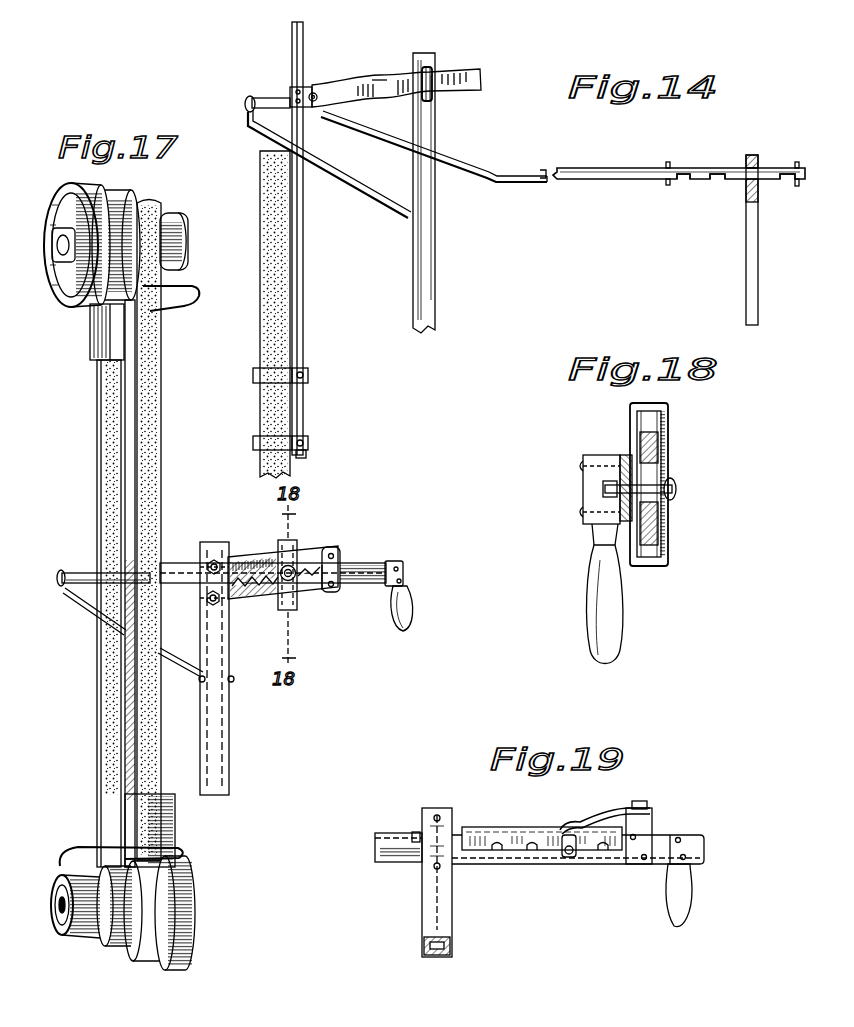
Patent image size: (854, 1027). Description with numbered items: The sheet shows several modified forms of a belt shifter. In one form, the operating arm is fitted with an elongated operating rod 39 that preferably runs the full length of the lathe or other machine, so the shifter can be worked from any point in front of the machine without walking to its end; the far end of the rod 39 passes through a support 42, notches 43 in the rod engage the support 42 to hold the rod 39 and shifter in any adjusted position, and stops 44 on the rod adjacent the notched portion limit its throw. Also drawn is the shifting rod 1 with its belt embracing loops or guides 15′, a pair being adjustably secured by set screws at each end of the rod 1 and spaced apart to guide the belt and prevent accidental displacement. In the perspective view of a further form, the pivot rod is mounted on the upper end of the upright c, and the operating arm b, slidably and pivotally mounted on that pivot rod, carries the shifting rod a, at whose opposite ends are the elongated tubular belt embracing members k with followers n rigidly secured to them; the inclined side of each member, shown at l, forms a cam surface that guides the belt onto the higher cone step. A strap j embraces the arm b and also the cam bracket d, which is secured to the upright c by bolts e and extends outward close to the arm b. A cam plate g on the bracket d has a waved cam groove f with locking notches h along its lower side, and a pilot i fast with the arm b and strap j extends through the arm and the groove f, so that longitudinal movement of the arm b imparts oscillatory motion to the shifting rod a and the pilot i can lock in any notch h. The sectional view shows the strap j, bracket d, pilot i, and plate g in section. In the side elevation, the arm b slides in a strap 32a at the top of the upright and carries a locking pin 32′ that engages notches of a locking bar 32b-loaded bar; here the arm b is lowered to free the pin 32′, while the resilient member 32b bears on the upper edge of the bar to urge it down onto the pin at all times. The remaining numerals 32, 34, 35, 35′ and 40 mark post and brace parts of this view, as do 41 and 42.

In FIG. 17, the shifting rod 1 is at (296, 313).
In FIG. 17, the loop or guide 15′ is at (252, 375).
In FIG. 17, the post 32 is at (437, 240).
In FIG. 17, the rod 34 is at (268, 96).
In FIG. 17, the brace rod 35 is at (362, 182).
In FIG. 17, the brace attachment 35′ is at (405, 78).
In FIG. 17, the bracket 40 is at (318, 106).
In FIG. 14, the operating rod 39 is at (603, 174).
In FIG. 14, the collar 41 is at (745, 168).
In FIG. 14, the support 42 is at (757, 188).
In FIG. 14, the notches 43 is at (718, 181).
In FIG. 14, the stops 44 is at (794, 163).
In FIG. 17, the shifting rod a is at (128, 675).
In FIG. 17, the operating arm b is at (372, 566).
In FIG. 18, the operating arm b is at (610, 527).
In FIG. 19, the operating arm b is at (522, 860).
In FIG. 17, the upright c is at (223, 755).
In FIG. 19, the upright c is at (440, 922).
In FIG. 17, the cam bracket d is at (315, 548).
In FIG. 18, the cam bracket d is at (666, 562).
In FIG. 17, the bolts e is at (212, 560).
In FIG. 17, the cam groove f is at (258, 584).
In FIG. 18, the cam groove f is at (620, 458).
In FIG. 17, the cam plate g is at (333, 547).
In FIG. 18, the cam plate g is at (665, 518).
In FIG. 17, the locking notches h is at (324, 586).
In FIG. 17, the pilot i is at (284, 564).
In FIG. 18, the pilot i is at (666, 484).
In FIG. 17, the strap j is at (292, 610).
In FIG. 18, the strap j is at (668, 420).
In FIG. 17, the belt embracing member k is at (90, 332).
In FIG. 17, the inclined portion l is at (165, 880).
In FIG. 17, the followers n is at (178, 304).
In FIG. 19, the strap 32a is at (422, 878).
In FIG. 19, the resilient member 32b is at (604, 814).
In FIG. 19, the locking pin 32′ is at (571, 858).